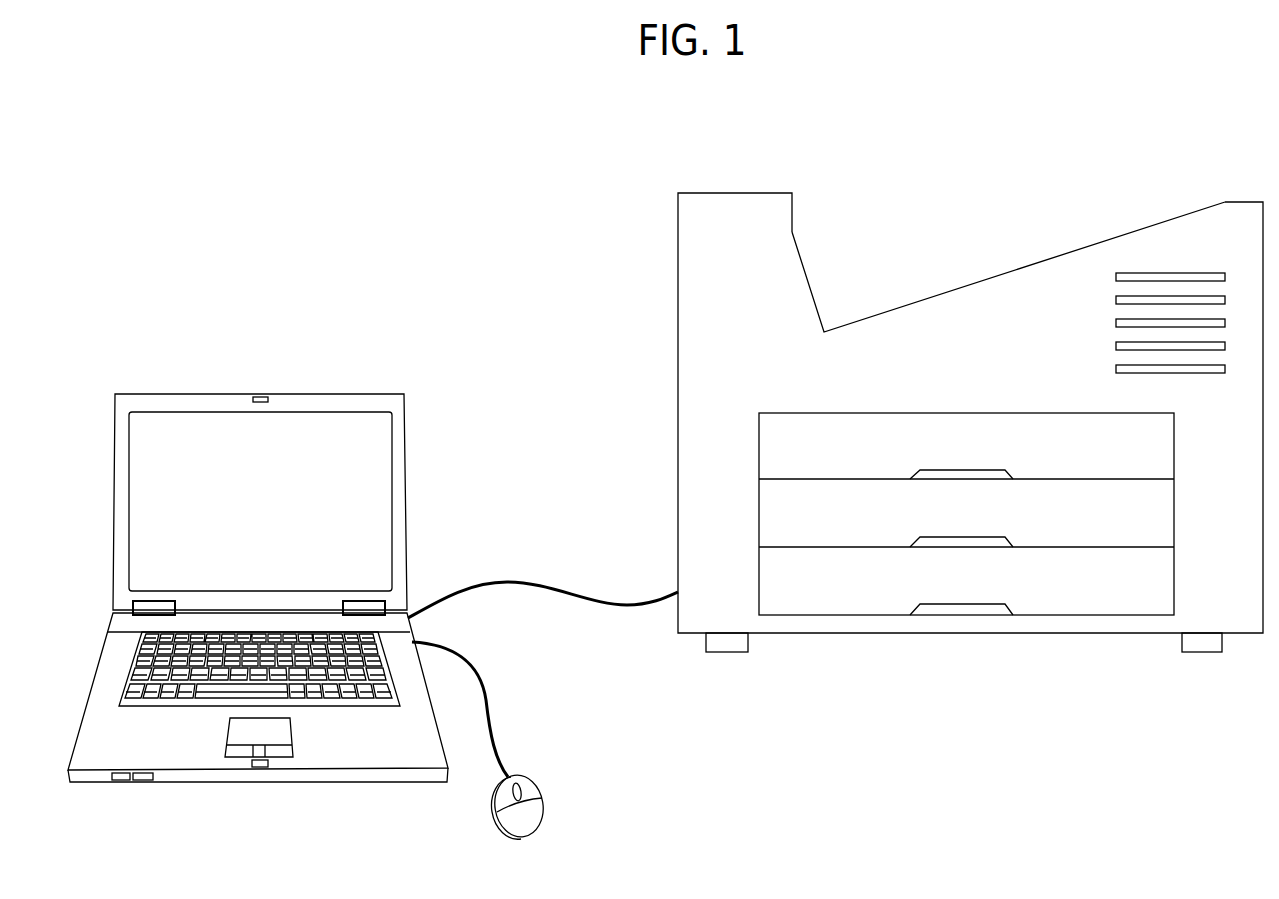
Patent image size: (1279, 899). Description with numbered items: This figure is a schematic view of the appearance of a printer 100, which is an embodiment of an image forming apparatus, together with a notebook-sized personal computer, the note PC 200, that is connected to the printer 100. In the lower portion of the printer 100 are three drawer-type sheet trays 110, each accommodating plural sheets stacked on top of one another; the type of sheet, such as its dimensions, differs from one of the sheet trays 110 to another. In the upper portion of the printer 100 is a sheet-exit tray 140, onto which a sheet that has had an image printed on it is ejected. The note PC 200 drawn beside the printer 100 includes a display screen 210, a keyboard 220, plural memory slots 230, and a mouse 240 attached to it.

The printer 100 is at (634, 178).
The sheet trays 110 is at (1140, 453).
The sheet-exit tray 140 is at (1037, 231).
The note PC 200 is at (106, 341).
The display screen 210 is at (367, 452).
The keyboard 220 is at (142, 630).
The memory slots 230 is at (118, 783).
The mouse 240 is at (543, 807).